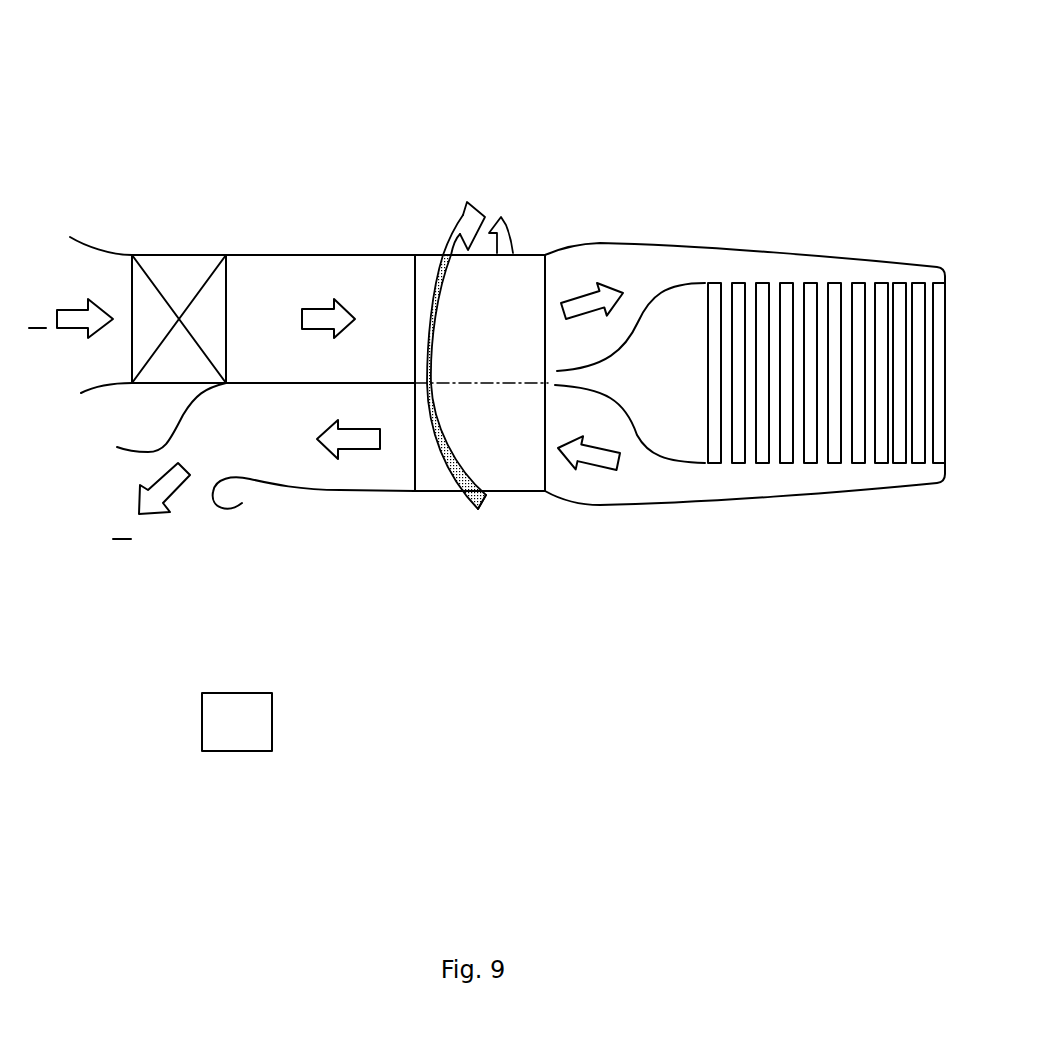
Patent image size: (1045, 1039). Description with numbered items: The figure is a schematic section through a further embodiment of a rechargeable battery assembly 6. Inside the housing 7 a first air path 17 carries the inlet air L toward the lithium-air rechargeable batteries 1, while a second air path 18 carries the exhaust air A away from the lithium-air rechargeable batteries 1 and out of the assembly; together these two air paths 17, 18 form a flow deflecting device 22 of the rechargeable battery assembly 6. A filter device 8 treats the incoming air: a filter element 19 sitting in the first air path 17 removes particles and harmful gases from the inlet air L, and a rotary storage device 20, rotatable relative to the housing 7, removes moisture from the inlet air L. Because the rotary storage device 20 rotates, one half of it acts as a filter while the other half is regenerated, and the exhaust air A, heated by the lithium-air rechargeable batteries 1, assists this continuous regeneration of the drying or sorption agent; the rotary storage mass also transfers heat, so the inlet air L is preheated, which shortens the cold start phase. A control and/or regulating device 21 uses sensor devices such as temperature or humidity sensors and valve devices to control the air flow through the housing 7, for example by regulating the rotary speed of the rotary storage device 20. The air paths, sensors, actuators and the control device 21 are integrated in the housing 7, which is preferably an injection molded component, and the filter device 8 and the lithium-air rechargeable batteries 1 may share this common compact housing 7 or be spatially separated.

The lithium-air rechargeable batteries 1 is at (877, 302).
The rechargeable battery assembly 6 is at (383, 102).
The housing 7 is at (777, 498).
The filter device 8 is at (442, 527).
The first air path 17 is at (317, 288).
The second air path 18 is at (360, 479).
The filter element 19 is at (164, 277).
The rotary storage device 20 is at (426, 271).
The control and/or regulating device 21 is at (243, 740).
The flow deflecting device 22 is at (393, 484).